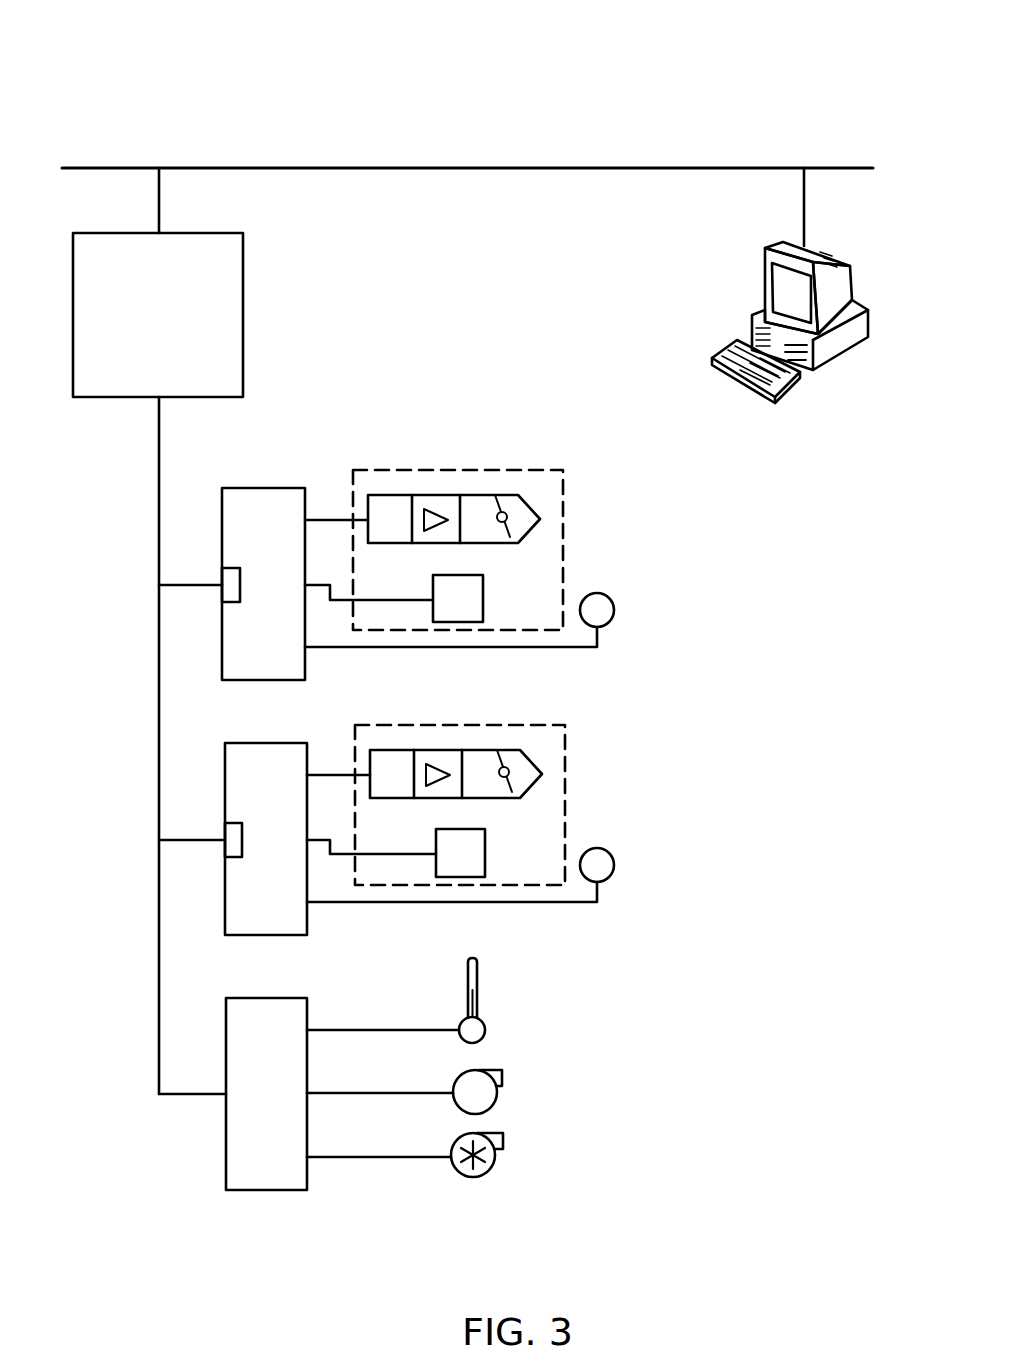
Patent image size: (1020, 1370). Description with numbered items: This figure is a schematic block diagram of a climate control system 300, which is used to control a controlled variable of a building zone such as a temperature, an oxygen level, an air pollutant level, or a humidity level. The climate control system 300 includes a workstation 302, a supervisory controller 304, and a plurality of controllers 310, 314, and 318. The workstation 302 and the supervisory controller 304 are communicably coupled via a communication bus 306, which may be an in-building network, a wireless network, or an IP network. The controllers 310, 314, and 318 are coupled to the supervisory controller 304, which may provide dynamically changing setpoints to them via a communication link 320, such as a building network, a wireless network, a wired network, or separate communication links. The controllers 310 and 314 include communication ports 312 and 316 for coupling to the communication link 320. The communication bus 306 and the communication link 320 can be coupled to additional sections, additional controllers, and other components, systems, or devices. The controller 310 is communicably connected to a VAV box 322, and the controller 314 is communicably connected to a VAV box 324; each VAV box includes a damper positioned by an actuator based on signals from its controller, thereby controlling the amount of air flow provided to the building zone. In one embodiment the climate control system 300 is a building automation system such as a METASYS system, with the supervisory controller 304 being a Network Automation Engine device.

The climate control system 300 is at (473, 58).
The workstation 302 is at (827, 350).
The supervisory controller 304 is at (232, 258).
The communication bus 306 is at (497, 170).
The controller 310 is at (278, 498).
The communication port 312 is at (222, 578).
The controller 314 is at (280, 753).
The communication port 316 is at (225, 833).
The controller 318 is at (268, 1008).
The communication link 320 is at (159, 902).
The VAV box 322 is at (552, 500).
The VAV box 324 is at (554, 757).